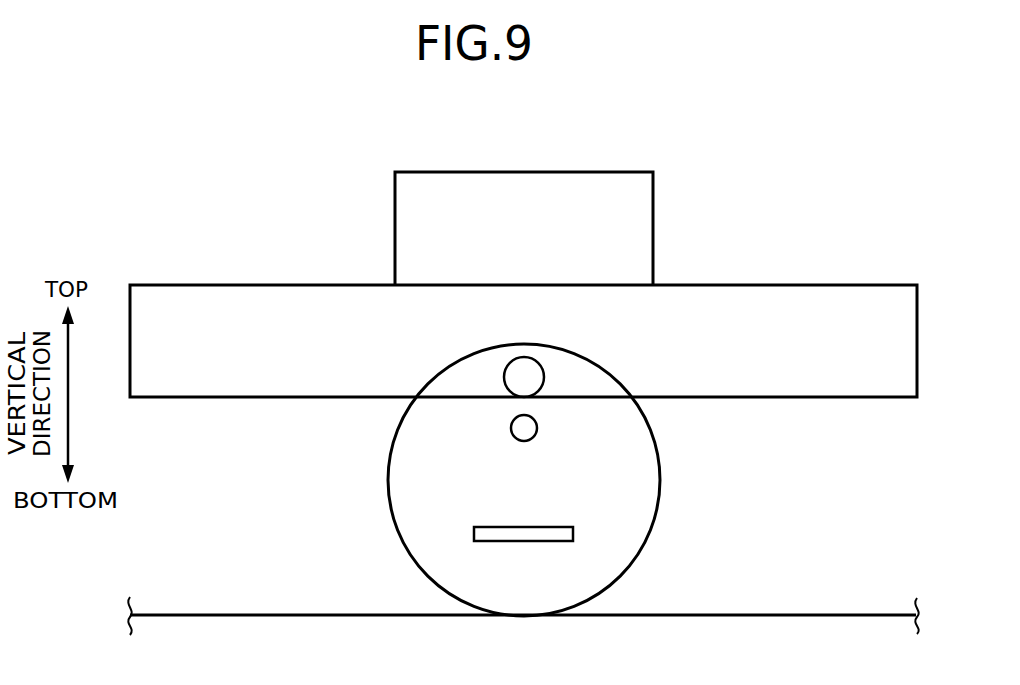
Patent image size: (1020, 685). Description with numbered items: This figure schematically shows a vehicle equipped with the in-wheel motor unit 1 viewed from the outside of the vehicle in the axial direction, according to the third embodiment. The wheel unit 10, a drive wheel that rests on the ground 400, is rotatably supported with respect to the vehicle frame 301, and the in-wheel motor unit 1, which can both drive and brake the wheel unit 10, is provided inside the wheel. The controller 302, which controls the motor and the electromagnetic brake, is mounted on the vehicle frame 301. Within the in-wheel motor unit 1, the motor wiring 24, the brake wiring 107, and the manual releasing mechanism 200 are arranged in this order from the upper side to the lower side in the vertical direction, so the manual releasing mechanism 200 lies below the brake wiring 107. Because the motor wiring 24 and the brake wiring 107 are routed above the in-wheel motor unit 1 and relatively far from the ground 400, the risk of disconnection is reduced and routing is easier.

The in-wheel motor unit 1 is at (570, 480).
The wheel unit 10 is at (652, 536).
The motor wiring 24 is at (504, 377).
The brake wiring 107 is at (511, 428).
The manual releasing mechanism 200 is at (489, 527).
The vehicle frame 301 is at (266, 303).
The controller 302 is at (521, 185).
The ground 400 is at (203, 615).